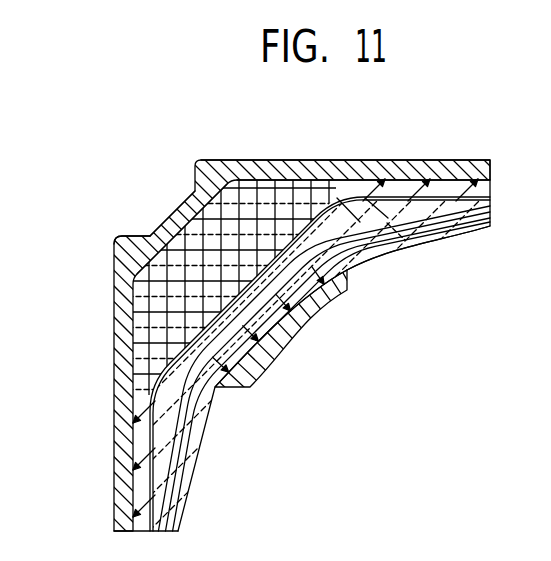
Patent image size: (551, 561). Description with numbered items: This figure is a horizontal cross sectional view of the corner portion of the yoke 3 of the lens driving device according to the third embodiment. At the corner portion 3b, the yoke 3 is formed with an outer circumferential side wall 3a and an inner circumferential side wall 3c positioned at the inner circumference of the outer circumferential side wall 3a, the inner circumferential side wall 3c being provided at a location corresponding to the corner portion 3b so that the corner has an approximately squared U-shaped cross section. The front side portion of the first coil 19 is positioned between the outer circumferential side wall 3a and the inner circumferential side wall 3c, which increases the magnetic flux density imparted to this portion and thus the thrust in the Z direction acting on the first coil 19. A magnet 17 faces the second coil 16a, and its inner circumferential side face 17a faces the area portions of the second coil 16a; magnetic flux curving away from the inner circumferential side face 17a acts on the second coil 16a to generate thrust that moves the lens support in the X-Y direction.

The yoke 3 is at (111, 302).
The outer circumferential side wall 3a is at (390, 160).
The corner portion 3b is at (170, 208).
The inner circumferential side wall 3c is at (303, 320).
The second coil 16a is at (228, 388).
The magnet 17 is at (250, 207).
The inner circumferential side face 17a is at (121, 236).
The first coil 19 is at (463, 216).